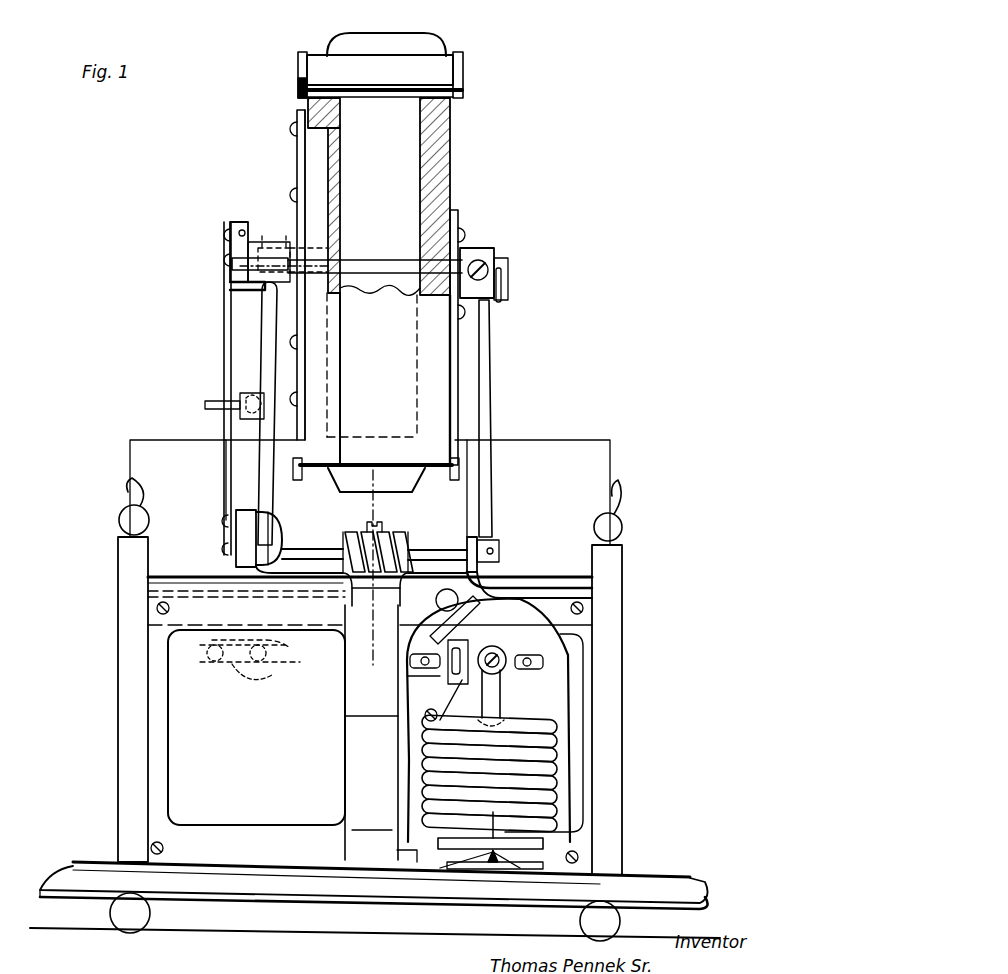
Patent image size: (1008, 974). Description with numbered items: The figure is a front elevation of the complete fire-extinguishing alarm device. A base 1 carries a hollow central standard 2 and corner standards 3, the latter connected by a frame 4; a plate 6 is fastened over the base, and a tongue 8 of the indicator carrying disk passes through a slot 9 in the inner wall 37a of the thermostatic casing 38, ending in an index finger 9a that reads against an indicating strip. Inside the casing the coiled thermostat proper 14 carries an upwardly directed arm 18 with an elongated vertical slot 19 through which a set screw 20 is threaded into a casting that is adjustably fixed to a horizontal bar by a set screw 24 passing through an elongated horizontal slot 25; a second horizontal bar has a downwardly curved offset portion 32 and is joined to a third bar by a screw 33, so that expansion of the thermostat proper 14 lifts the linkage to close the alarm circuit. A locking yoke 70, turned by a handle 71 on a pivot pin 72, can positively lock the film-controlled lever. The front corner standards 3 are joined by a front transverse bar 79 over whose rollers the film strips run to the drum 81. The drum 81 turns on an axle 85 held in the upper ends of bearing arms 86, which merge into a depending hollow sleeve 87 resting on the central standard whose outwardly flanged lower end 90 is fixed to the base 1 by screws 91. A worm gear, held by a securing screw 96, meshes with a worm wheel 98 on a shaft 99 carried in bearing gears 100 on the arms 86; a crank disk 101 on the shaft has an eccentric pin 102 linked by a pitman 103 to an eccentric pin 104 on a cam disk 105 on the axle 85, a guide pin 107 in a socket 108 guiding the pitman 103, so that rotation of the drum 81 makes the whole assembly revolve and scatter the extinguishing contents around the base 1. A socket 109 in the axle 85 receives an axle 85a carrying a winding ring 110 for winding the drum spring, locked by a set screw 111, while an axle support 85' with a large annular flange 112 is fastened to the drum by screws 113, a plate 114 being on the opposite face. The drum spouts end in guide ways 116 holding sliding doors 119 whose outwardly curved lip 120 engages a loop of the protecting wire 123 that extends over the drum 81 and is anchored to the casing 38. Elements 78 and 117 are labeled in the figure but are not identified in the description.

The base 1 is at (270, 886).
The hollow central standard 2 is at (350, 785).
The corner standards 3 is at (642, 770).
The frame 4 is at (232, 800).
The plate 6 is at (400, 659).
The tongue 8 is at (490, 880).
The slot 9 is at (488, 860).
The index finger 9a is at (500, 860).
The thermostat proper 14 is at (565, 740).
The upwardly directed arm 18 is at (426, 718).
The elongated vertical slot 19 is at (502, 646).
The set screw 20 is at (440, 712).
The set screw 24 is at (450, 668).
The elongated horizontal slot 25 is at (446, 658).
The downwardly curved and offset portion 32 is at (506, 676).
The screw 33 is at (530, 669).
The inner wall 37a is at (548, 843).
The thermostatic casing 38 is at (520, 440).
The locking yoke 70 is at (500, 582).
The handle 71 is at (400, 604).
The pivot pin 72 is at (470, 614).
The post 78 is at (118, 683).
The front transverse bar 79 is at (578, 592).
The drum 81 is at (435, 142).
The axle 85 is at (208, 254).
The axle support 85' is at (308, 254).
The axle 85a is at (496, 264).
The bearing arms 86 is at (262, 325).
The depending hollow sleeve 87 is at (352, 676).
The outwardly flanged lower end 90 is at (290, 862).
The screws 91 is at (372, 855).
The securing screw 96 is at (366, 528).
The worm wheel 98 is at (348, 596).
The shaft 99 is at (296, 546).
The bearing gears 100 is at (467, 537).
The crank disk 101 is at (236, 556).
The eccentric pin 102 is at (226, 522).
The pitman 103 is at (232, 470).
The eccentric pin 104 is at (228, 236).
The cam disk 105 is at (232, 280).
The guide pin 107 is at (220, 403).
The socket 108 is at (250, 395).
The socket 109 is at (280, 240).
The winding ring 110 is at (504, 296).
The set screw 111 is at (476, 250).
The large annular flange 112 is at (297, 215).
The screws 113 is at (297, 195).
The plate or member 114 is at (462, 235).
The guide ways 116 is at (463, 80).
The tab 117 is at (298, 84).
The sliding doors or covers 119 is at (338, 68).
The outwardly curved lip 120 is at (438, 492).
The protecting wire 123 is at (128, 490).